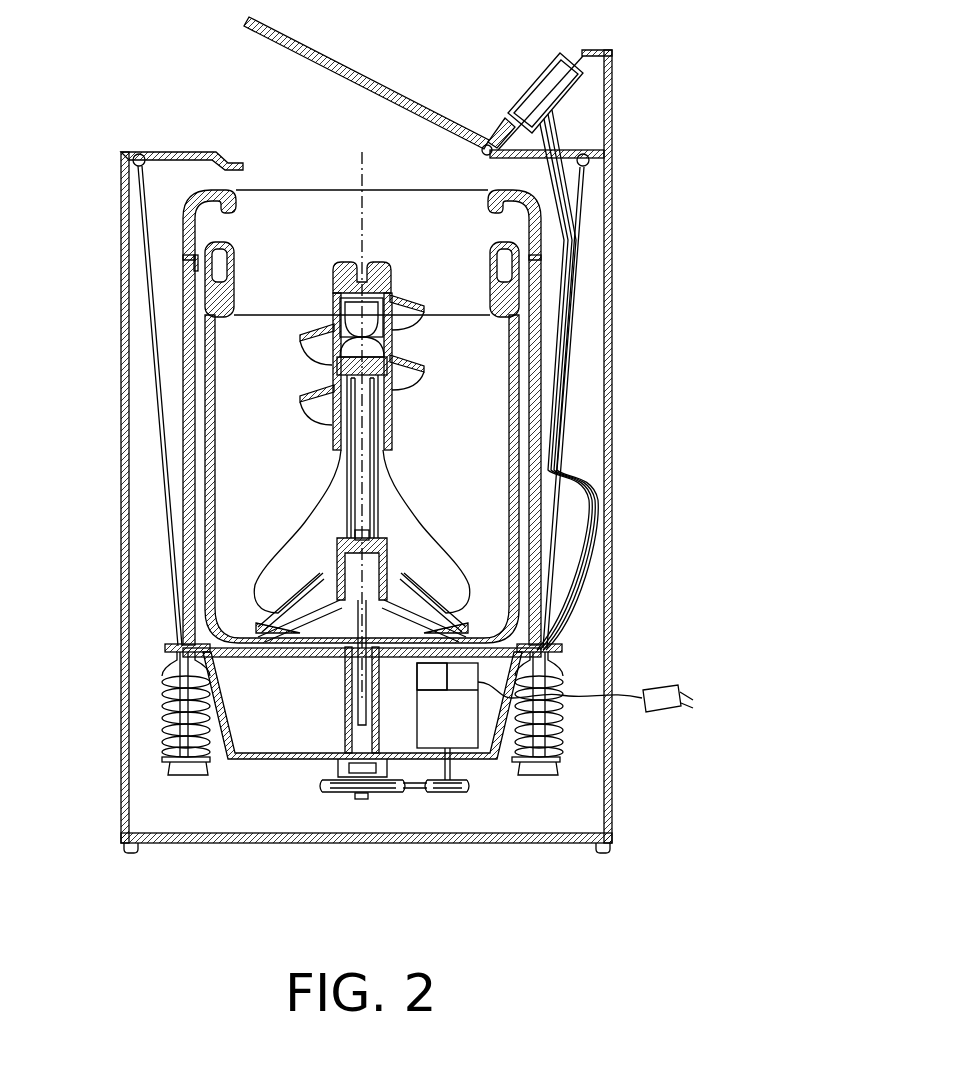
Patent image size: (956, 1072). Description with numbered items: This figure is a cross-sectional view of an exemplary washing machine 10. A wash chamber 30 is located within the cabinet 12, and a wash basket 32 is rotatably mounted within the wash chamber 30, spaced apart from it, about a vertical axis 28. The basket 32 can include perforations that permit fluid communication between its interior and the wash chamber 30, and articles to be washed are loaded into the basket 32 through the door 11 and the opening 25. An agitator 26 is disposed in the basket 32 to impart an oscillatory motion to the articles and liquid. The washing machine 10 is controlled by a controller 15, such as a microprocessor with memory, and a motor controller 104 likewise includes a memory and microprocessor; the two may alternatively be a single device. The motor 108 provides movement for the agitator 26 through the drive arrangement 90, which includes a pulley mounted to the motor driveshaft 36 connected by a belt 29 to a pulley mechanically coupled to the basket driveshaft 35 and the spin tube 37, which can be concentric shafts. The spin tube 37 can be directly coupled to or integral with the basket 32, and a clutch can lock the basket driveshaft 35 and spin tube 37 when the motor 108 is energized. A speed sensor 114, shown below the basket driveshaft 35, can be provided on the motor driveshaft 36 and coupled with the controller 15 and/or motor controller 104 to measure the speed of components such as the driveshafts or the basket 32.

The washing machine 10 is at (156, 53).
The door 11 is at (374, 80).
The cabinet 12 is at (121, 206).
The controller 15 is at (568, 96).
The opening 25 is at (299, 224).
The vertical axis 28 is at (364, 170).
The wash chamber 30 is at (178, 311).
The wash basket 32 is at (510, 392).
The agitator 26 is at (385, 482).
The spin tube 37 is at (345, 684).
The basket driveshaft 35 is at (358, 724).
The speed sensor 114 is at (338, 768).
The drive arrangement 90 is at (342, 801).
The belt 29 is at (378, 800).
The motor driveshaft 36 is at (472, 776).
The motor controller 104 is at (469, 663).
The motor 108 is at (492, 762).